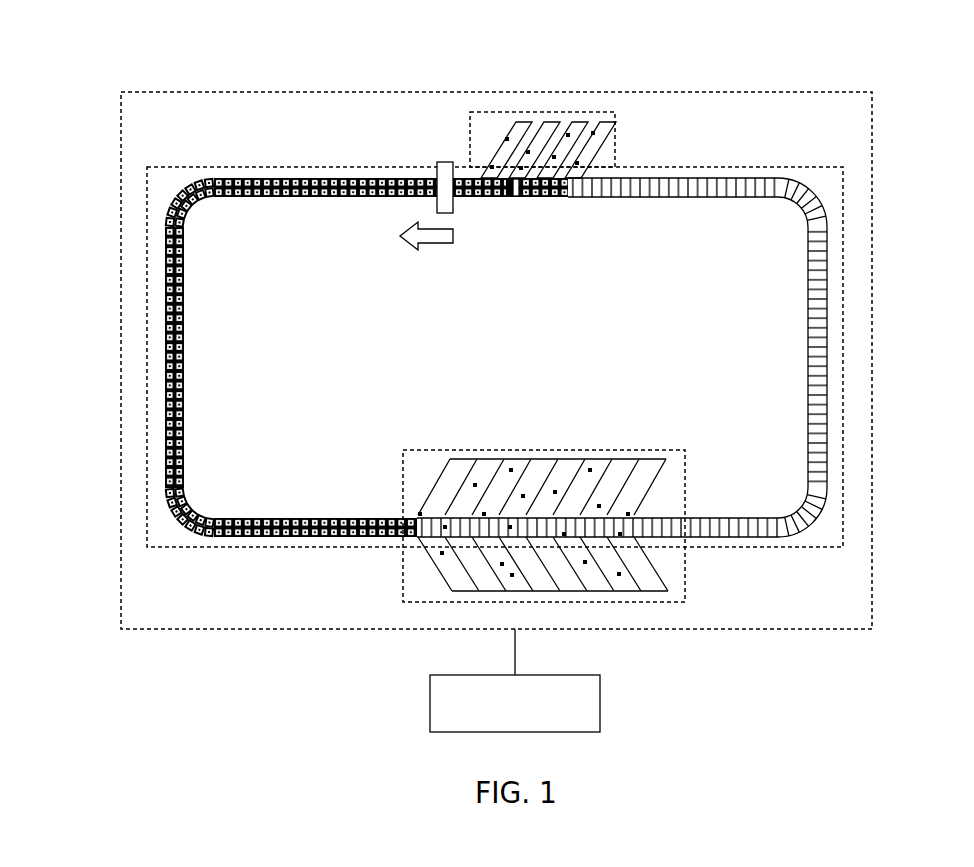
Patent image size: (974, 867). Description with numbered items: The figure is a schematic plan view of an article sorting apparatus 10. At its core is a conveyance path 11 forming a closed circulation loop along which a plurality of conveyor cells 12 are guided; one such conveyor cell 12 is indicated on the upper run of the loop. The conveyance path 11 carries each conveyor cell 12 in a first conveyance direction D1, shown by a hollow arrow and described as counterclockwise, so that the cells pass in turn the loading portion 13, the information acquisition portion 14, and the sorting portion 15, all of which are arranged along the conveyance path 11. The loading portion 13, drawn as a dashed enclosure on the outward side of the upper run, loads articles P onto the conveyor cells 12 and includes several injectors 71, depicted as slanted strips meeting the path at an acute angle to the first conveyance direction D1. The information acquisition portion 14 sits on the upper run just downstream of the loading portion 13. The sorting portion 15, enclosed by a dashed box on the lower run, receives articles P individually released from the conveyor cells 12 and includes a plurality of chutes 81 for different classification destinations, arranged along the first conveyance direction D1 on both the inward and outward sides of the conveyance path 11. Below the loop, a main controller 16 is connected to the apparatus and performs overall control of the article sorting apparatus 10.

The article sorting apparatus 10 is at (898, 88).
The conveyance path 11 is at (783, 164).
The conveyor cell 12 is at (516, 198).
The article P is at (509, 198).
The loading portion 13 is at (576, 112).
The injector 71 is at (551, 122).
The information acquisition portion 14 is at (441, 162).
The first conveyance direction D1 is at (426, 246).
The sorting portion 15 is at (577, 531).
The chute 81 is at (544, 459).
The main controller 16 is at (602, 705).